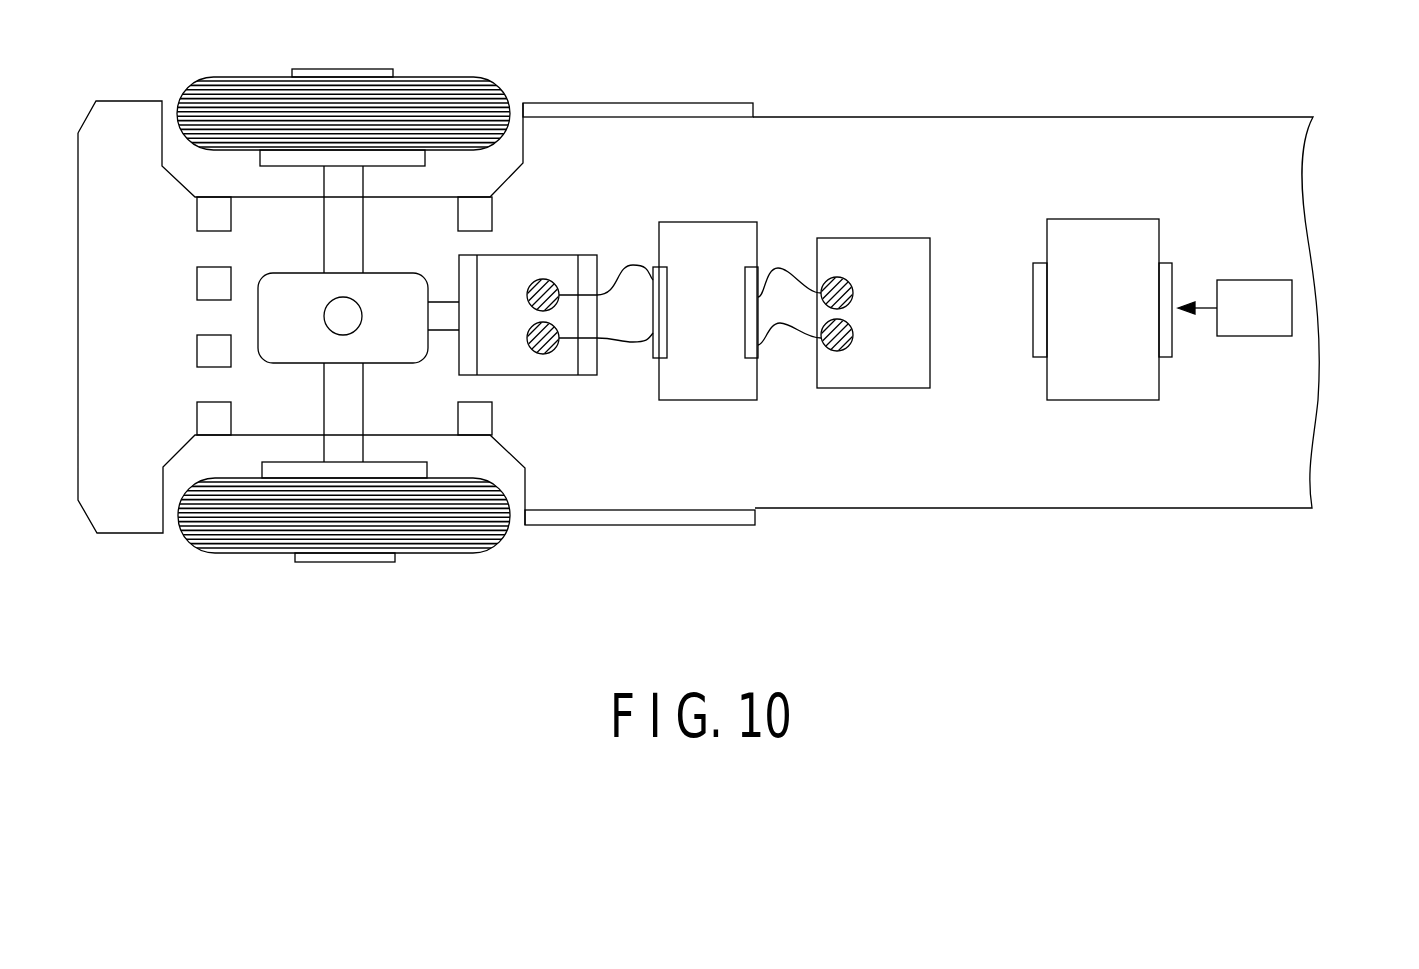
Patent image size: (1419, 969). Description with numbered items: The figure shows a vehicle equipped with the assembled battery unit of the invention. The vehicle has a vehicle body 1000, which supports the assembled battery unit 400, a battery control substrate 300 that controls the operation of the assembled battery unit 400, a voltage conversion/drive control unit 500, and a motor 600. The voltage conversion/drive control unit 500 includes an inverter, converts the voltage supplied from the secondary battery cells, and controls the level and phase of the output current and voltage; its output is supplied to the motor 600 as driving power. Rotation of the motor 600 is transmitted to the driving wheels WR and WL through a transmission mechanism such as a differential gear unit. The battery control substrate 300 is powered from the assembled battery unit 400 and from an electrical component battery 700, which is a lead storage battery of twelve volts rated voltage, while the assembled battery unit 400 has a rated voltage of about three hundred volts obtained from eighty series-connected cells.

The driving wheel WR is at (463, 77).
The driving wheel WL is at (465, 547).
The vehicle body 1000 is at (1225, 125).
The motor 600 is at (566, 365).
The voltage conversion/drive control unit 500 is at (706, 222).
The assembled battery unit 400 is at (873, 238).
The battery control substrate 300 is at (1100, 400).
The electrical component battery 700 is at (1257, 336).